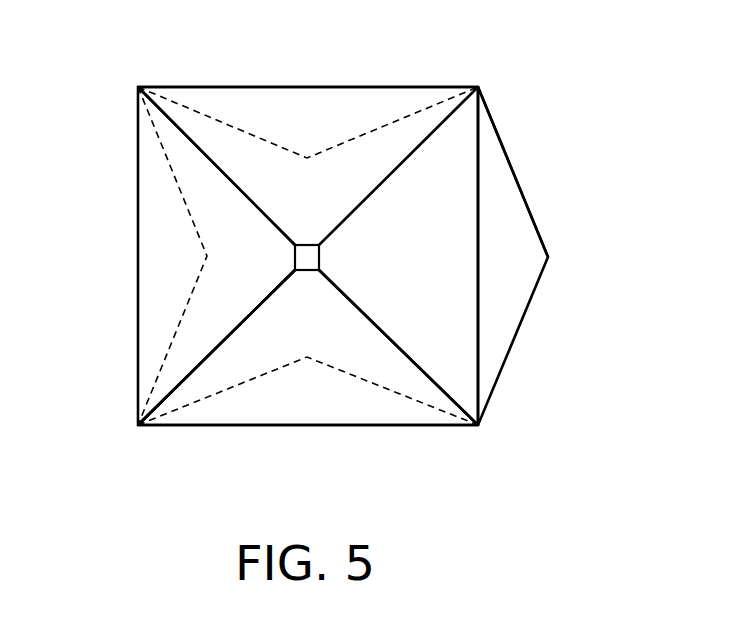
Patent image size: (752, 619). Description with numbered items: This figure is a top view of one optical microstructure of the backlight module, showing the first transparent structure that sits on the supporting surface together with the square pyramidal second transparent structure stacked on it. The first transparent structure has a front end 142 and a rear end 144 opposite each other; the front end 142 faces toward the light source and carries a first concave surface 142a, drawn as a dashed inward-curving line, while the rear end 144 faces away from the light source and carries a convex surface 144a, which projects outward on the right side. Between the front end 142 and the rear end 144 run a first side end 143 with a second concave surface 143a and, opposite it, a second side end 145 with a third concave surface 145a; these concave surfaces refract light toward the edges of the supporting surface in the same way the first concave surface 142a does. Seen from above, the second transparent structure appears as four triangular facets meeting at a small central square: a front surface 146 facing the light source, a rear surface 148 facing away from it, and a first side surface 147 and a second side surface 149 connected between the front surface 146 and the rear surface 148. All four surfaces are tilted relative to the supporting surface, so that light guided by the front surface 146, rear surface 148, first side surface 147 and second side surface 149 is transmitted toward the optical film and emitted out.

The front end 142 is at (137, 348).
The first concave surface 142a is at (172, 168).
The first side end 143 is at (224, 428).
The second concave surface 143a is at (386, 392).
The rear end 144 is at (477, 338).
The convex surface 144a is at (515, 177).
The second side end 145 is at (222, 87).
The third concave surface 145a is at (386, 125).
The front surface 146 is at (250, 258).
The first side surface 147 is at (308, 312).
The rear surface 148 is at (423, 257).
The second side surface 149 is at (308, 202).